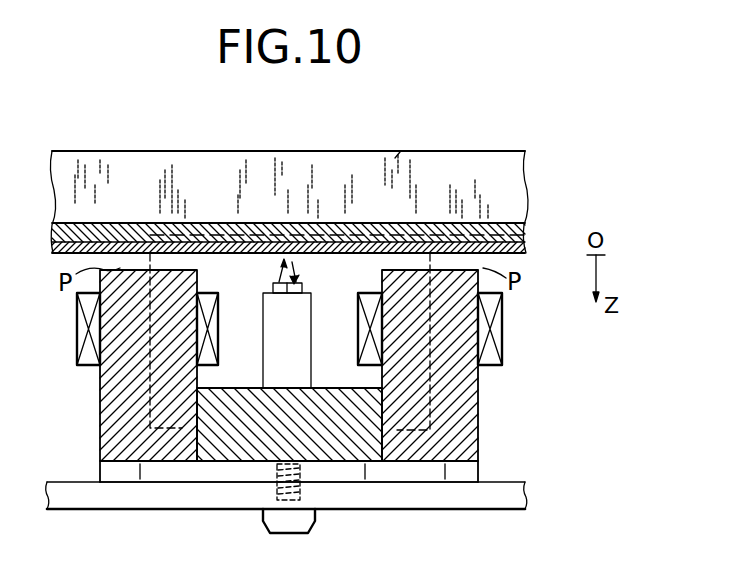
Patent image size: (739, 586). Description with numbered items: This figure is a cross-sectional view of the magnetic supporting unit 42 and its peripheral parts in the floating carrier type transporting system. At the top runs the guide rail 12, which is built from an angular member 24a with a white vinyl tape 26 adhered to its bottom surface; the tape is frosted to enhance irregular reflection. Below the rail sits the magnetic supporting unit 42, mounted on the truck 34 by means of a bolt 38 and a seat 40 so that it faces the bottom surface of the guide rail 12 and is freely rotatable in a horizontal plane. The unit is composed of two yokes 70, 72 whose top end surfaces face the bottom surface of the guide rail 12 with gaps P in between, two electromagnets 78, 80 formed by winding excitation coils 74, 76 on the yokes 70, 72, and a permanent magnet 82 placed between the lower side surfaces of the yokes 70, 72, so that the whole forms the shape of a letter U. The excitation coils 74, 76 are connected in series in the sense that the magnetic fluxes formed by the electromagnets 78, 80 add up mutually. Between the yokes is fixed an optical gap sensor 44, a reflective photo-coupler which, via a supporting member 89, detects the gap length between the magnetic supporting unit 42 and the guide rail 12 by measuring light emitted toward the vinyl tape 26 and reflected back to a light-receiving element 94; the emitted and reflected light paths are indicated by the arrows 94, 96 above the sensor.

The guide rail 12 is at (103, 160).
The angular member 24a is at (396, 158).
The white vinyl tape 26 is at (527, 254).
The truck 34 is at (518, 482).
The bolt 38 is at (315, 530).
The seat 40 is at (100, 470).
The magnetic supporting unit 42 is at (478, 441).
The optical gap sensor 44 is at (302, 290).
The yoke 70 is at (100, 402).
The yoke 72 is at (478, 396).
The excitation coil 74 is at (77, 334).
The excitation coil 76 is at (496, 336).
The electromagnet 78 is at (138, 462).
The electromagnet 80 is at (440, 462).
The permanent magnet 82 is at (360, 462).
The center core 89 is at (305, 362).
The light-receiving element 94 is at (276, 288).
The downward flux arrow 96 is at (298, 289).